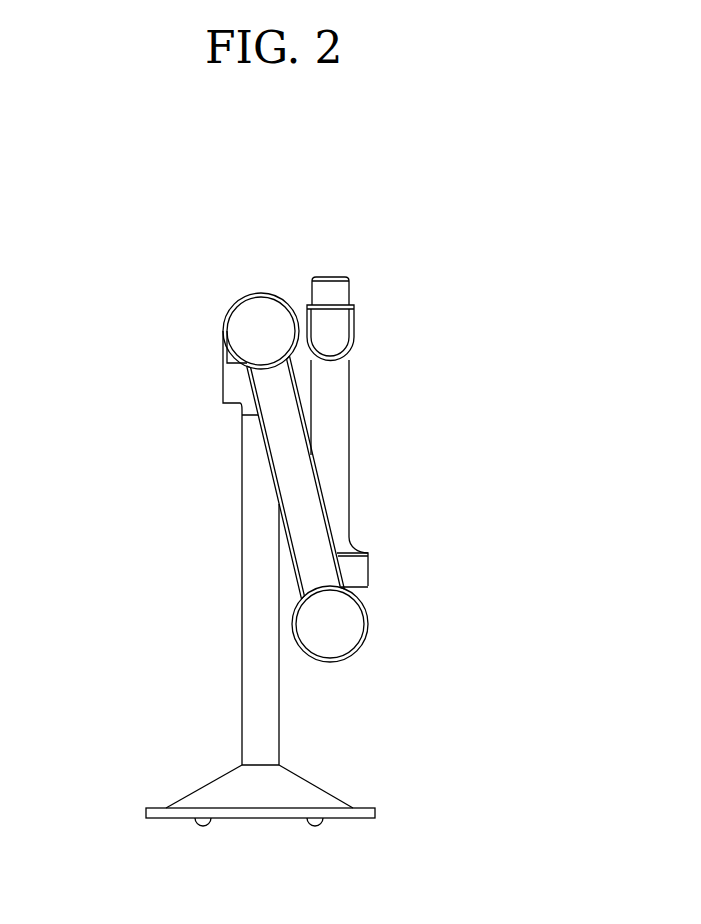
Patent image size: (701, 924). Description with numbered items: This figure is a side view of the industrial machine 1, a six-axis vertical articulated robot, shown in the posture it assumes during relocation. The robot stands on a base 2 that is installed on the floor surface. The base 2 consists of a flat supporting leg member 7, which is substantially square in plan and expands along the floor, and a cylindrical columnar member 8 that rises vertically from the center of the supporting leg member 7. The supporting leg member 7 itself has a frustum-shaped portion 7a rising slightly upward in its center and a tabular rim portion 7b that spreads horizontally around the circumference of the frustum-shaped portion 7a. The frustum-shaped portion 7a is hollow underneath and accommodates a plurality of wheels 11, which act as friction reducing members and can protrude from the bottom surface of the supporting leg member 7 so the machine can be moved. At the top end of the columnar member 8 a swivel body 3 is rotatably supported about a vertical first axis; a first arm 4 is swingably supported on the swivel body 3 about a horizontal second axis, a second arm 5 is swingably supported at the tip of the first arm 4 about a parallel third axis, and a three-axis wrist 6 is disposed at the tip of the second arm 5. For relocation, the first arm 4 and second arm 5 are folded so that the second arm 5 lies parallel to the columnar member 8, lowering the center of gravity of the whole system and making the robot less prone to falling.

The industrial machine 1 is at (84, 250).
The base 2 is at (196, 741).
The swivel body 3 is at (222, 386).
The first arm 4 is at (251, 465).
The second arm 5 is at (380, 592).
The three-axis wrist 6 is at (330, 265).
The supporting leg member 7 is at (176, 784).
The frustum-shaped portion 7a is at (315, 780).
The tabular rim portion 7b is at (365, 808).
The columnar member 8 is at (242, 613).
The wheels 11 is at (203, 828).